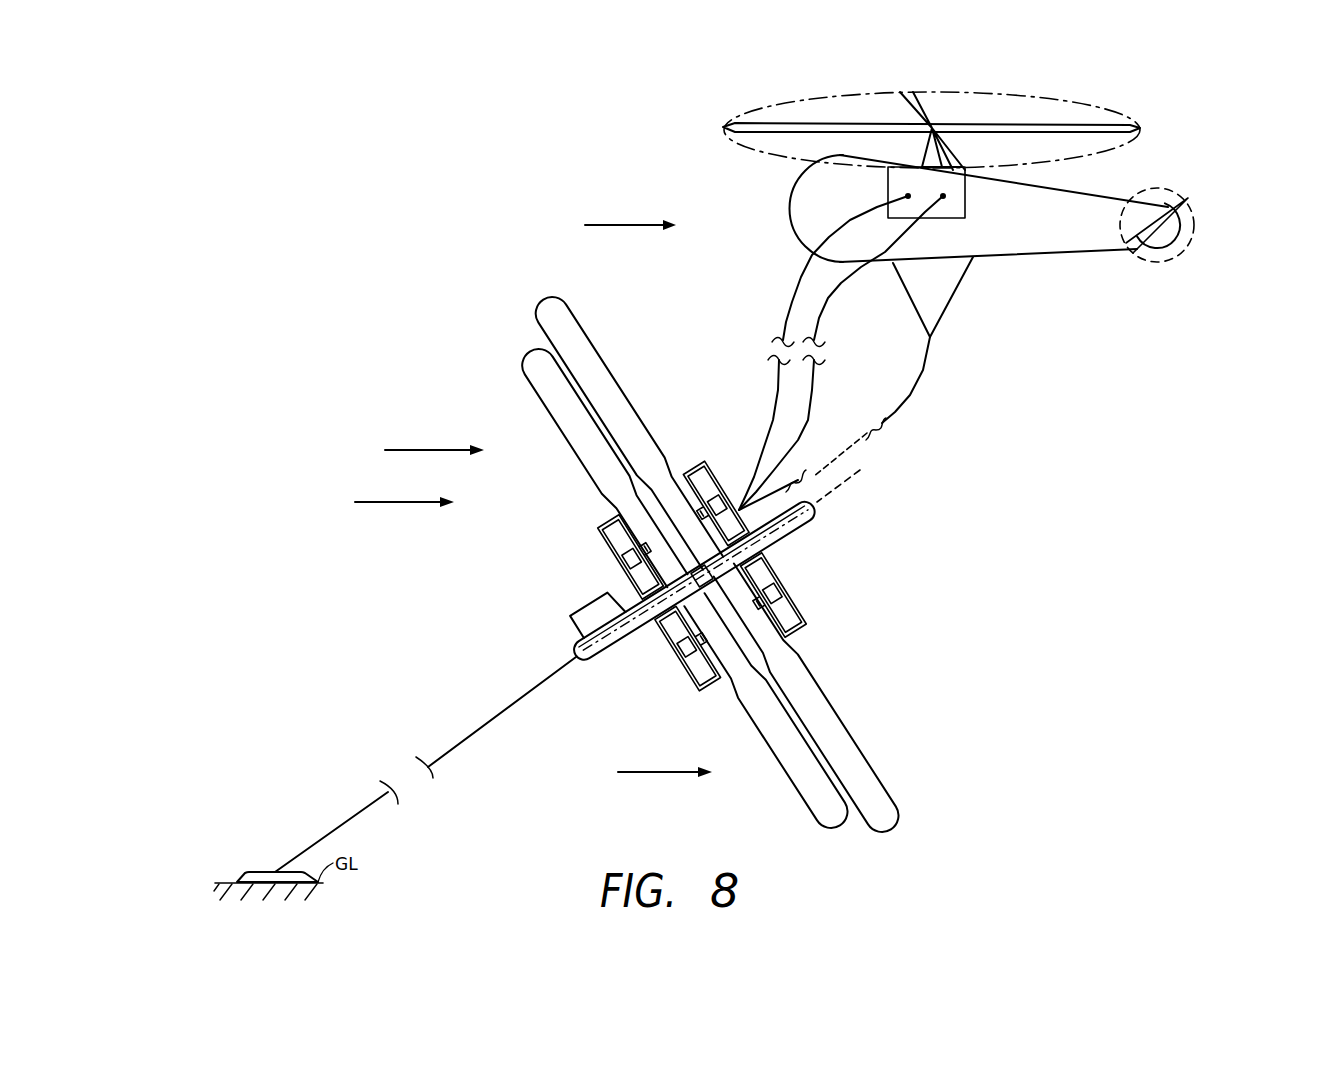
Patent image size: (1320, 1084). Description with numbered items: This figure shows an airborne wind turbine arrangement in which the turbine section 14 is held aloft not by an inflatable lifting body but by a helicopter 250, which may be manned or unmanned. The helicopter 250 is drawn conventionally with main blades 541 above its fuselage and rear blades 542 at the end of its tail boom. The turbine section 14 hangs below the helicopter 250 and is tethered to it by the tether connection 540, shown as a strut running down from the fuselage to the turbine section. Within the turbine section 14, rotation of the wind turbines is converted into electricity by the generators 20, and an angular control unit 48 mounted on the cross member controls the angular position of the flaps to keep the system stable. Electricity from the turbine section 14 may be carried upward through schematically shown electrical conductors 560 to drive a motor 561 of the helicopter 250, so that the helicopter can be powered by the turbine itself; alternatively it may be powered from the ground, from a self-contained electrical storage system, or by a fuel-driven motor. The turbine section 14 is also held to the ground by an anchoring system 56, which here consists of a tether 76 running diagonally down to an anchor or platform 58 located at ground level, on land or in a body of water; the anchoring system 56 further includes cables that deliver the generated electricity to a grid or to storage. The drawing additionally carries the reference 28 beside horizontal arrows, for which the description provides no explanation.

The main blades 541 is at (724, 132).
The helicopter 250 is at (788, 218).
The rear blades 542 is at (1190, 200).
The motor 561 is at (965, 220).
The electrical conductors 560 is at (808, 420).
The tether connection 540 is at (917, 383).
The wind / airflow 28 is at (405, 502).
The generators 20 is at (615, 525).
The turbine section 14 is at (911, 822).
The anchoring system 56 is at (313, 768).
The angular control unit 48 is at (578, 617).
The tether 76 is at (337, 828).
The anchor or platform 58 is at (245, 873).